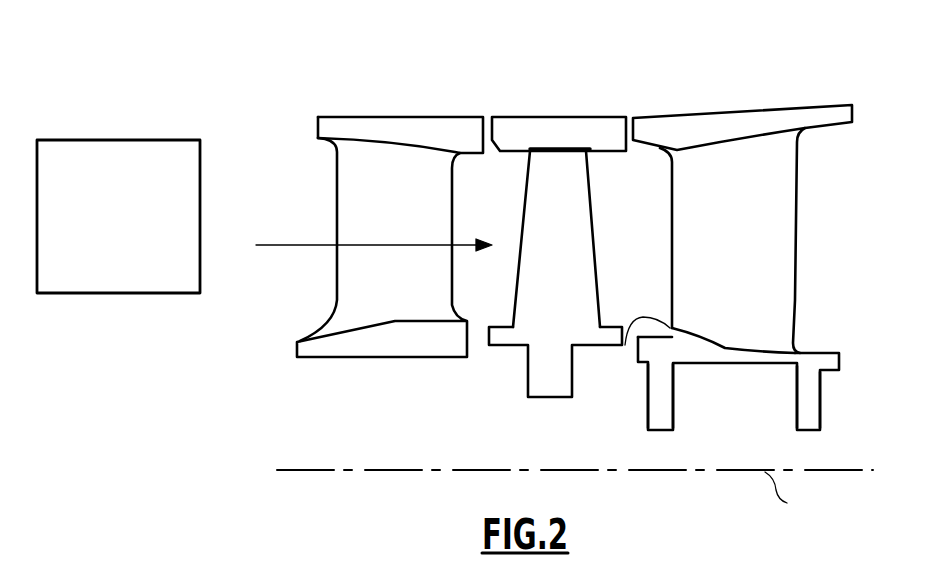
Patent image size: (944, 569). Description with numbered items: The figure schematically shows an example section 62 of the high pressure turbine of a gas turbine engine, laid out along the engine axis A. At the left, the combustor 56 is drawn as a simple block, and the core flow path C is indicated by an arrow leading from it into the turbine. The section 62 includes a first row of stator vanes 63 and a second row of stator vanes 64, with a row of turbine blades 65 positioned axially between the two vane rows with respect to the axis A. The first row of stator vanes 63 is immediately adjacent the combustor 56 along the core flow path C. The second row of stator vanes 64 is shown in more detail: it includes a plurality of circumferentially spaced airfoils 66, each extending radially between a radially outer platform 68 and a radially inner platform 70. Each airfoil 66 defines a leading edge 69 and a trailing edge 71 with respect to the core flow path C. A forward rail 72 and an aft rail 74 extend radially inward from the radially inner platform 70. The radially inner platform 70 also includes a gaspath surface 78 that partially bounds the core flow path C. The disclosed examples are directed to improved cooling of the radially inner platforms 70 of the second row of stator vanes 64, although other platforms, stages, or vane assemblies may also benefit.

The combustor 56 is at (135, 293).
The section 62 is at (305, 56).
The first row of stator vanes 63 is at (403, 106).
The second row of stator vanes 64 is at (740, 98).
The row of turbine blades 65 is at (559, 106).
The airfoil 66 is at (732, 240).
The radially outer platform 68 is at (790, 120).
The leading edge 69 is at (670, 255).
The radially inner platform 70 is at (732, 358).
The trailing edge 71 is at (795, 256).
The forward rail 72 is at (660, 397).
The aft rail 74 is at (815, 397).
The gaspath surface 78 is at (625, 345).
The core flow path C is at (364, 247).
The axis A is at (575, 497).